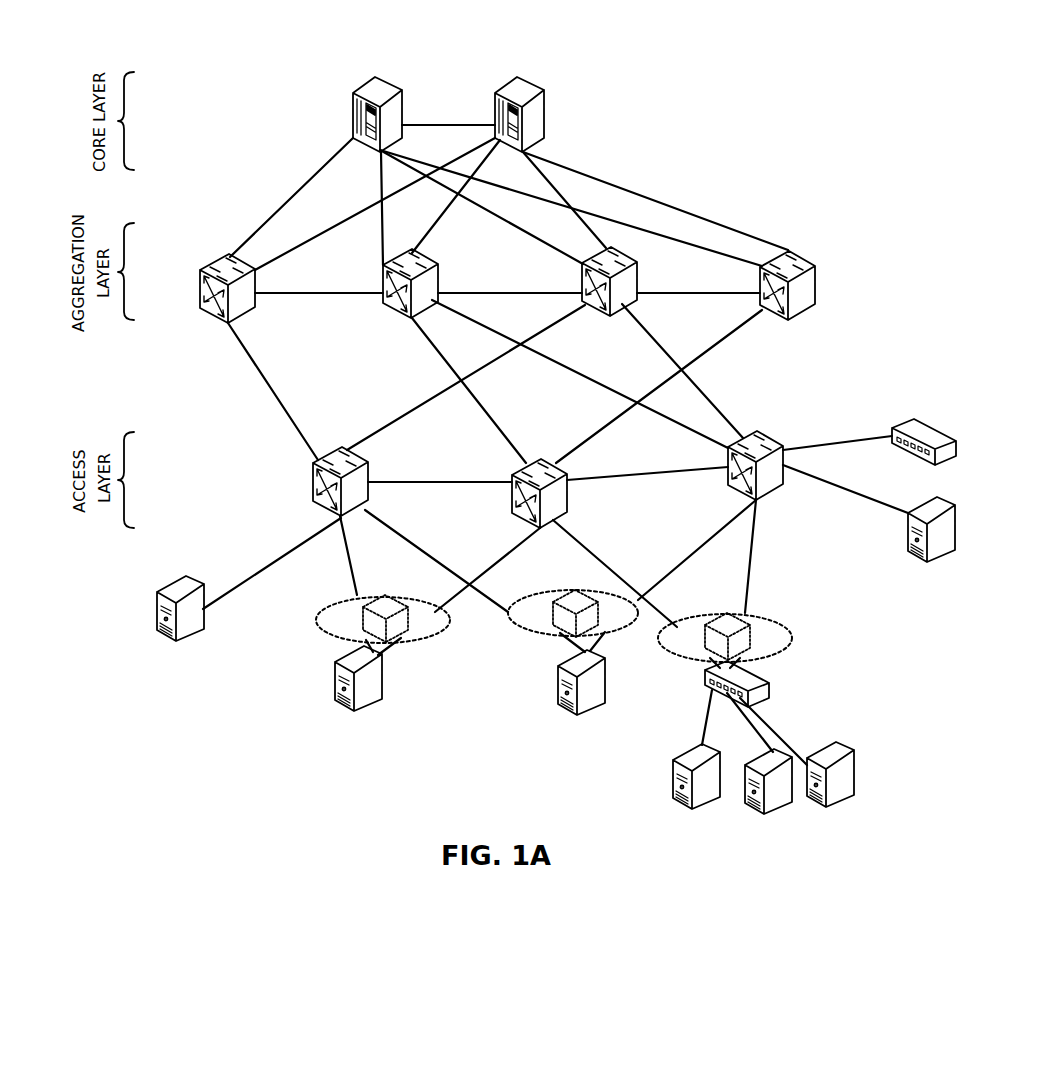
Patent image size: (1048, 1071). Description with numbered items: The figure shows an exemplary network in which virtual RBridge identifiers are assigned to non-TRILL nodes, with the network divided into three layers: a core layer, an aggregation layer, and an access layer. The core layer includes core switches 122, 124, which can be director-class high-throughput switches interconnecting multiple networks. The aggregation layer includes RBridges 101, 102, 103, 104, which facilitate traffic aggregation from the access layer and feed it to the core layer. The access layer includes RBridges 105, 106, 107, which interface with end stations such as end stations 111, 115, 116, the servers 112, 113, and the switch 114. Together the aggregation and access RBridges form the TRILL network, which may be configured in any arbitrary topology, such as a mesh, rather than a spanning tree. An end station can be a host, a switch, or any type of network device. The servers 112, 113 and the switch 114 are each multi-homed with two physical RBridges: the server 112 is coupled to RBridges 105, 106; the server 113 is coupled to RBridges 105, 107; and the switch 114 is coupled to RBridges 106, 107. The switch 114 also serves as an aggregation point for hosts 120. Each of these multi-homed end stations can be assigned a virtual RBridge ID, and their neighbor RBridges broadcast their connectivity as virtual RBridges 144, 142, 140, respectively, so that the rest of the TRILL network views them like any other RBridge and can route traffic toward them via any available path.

The RBridge 101 is at (200, 298).
The RBridge 102 is at (437, 268).
The RBridge 103 is at (637, 282).
The RBridge 104 is at (815, 268).
The RBridge 105 is at (313, 498).
The RBridge 106 is at (513, 515).
The RBridge 107 is at (787, 475).
The end station 111 is at (185, 638).
The server 112 is at (335, 705).
The server 113 is at (560, 706).
The switch 114 is at (765, 702).
The end station 115 is at (953, 545).
The end station 116 is at (913, 418).
The hosts 120 is at (693, 812).
The core switch 122 is at (353, 130).
The core switch 124 is at (547, 132).
The virtual RBridge 140 is at (778, 653).
The virtual RBridge 142 is at (515, 620).
The virtual RBridge 144 is at (317, 620).